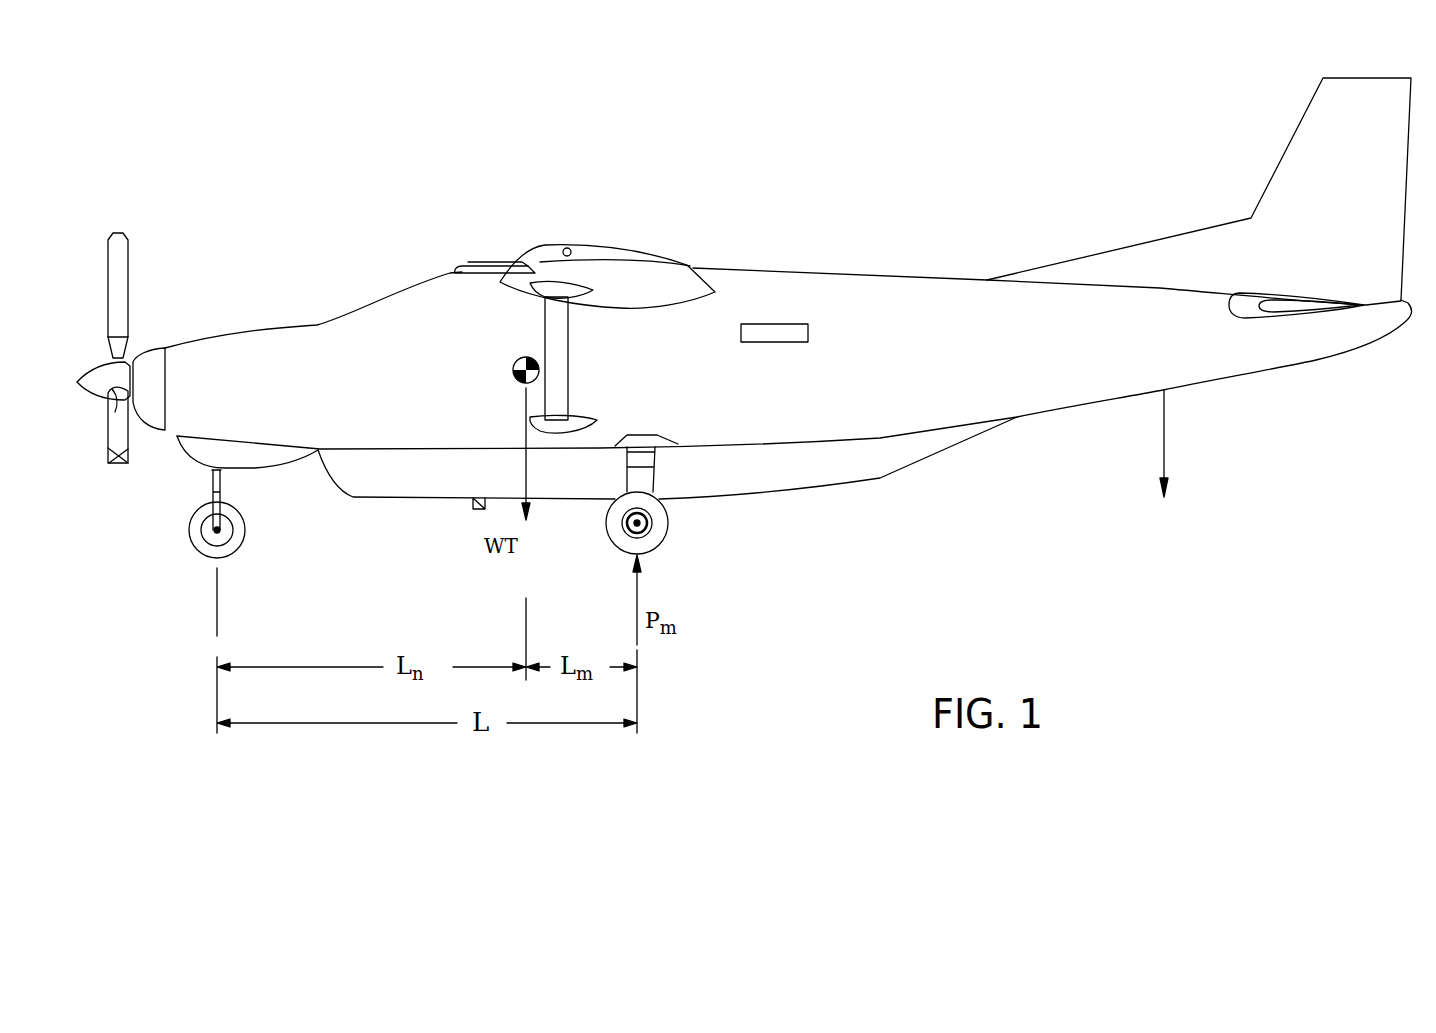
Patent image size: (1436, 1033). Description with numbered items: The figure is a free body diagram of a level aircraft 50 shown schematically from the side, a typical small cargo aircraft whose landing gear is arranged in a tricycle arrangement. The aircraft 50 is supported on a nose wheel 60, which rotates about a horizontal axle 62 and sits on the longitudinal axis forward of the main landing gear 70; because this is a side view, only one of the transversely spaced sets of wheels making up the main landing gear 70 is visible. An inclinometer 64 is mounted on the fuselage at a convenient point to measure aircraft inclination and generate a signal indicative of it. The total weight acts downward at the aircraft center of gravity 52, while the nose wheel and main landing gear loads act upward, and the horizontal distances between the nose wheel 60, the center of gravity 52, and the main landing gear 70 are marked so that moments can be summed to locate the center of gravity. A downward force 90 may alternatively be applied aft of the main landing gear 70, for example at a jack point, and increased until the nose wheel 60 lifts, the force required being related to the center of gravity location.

The aircraft 50 is at (742, 250).
The aircraft center of gravity 52 is at (512, 367).
The nose wheel 60 is at (200, 530).
The horizontal axle 62 is at (228, 528).
The inclinometer 64 is at (803, 326).
The main landing gear units 70 is at (667, 528).
The downward force 90 is at (1164, 457).